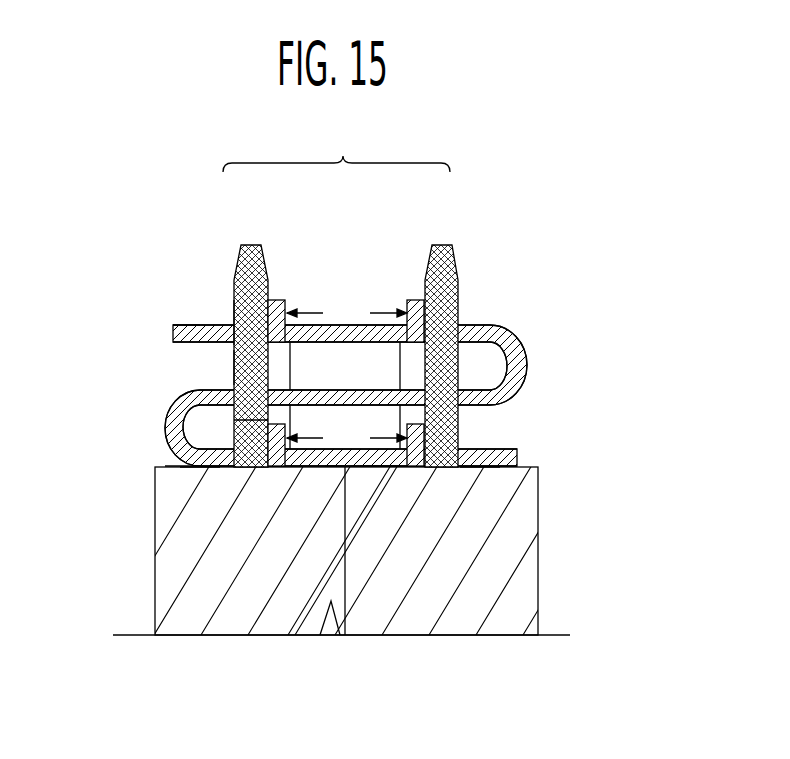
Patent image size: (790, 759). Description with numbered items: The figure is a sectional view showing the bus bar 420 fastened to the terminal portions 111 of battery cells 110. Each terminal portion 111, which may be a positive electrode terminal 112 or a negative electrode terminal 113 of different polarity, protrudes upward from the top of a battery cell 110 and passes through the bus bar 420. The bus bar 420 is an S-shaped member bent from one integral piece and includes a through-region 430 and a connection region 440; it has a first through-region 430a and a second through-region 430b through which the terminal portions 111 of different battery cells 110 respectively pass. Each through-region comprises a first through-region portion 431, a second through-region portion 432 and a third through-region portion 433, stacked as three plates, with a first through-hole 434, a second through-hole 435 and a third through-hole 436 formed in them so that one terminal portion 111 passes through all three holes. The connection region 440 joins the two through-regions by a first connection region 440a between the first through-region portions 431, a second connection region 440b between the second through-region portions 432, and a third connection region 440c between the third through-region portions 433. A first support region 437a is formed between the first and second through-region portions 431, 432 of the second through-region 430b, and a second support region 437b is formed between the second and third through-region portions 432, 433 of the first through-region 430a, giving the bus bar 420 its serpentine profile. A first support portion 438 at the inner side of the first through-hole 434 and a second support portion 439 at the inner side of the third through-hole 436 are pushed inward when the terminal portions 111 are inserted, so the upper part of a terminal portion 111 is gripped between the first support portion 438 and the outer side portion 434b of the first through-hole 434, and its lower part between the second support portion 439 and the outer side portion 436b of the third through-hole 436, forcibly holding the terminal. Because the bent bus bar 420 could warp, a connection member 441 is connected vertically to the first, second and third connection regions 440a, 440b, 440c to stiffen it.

The battery cell 110 is at (155, 533).
The terminal portion 111 is at (336, 148).
The positive electrode terminal 112 is at (250, 245).
The negative electrode terminal 113 is at (443, 245).
The bus bar 420 is at (118, 305).
The through-region 430 is at (366, 352).
The first through-region portion 431 is at (510, 318).
The second through-region portion 432 is at (522, 392).
The third through-region portion 433 is at (524, 449).
The first through-hole 434 is at (290, 316).
The outer side portion of first through-hole 434b is at (233, 320).
The second through-hole 435 is at (238, 372).
The third through-hole 436 is at (278, 468).
The outer side portion of third through-hole 436b is at (253, 468).
The first support region 437a is at (512, 366).
The second support region 437b is at (167, 424).
The first support portion 438 is at (272, 300).
The second support portion 439 is at (178, 468).
The connection region 440 is at (443, 672).
The first connection region 440a is at (390, 468).
The second connection region 440b is at (372, 468).
The third connection region 440c is at (334, 478).
The connection member 441 is at (355, 357).
The first through-region 430a is at (198, 490).
The second through-region 430b is at (482, 485).